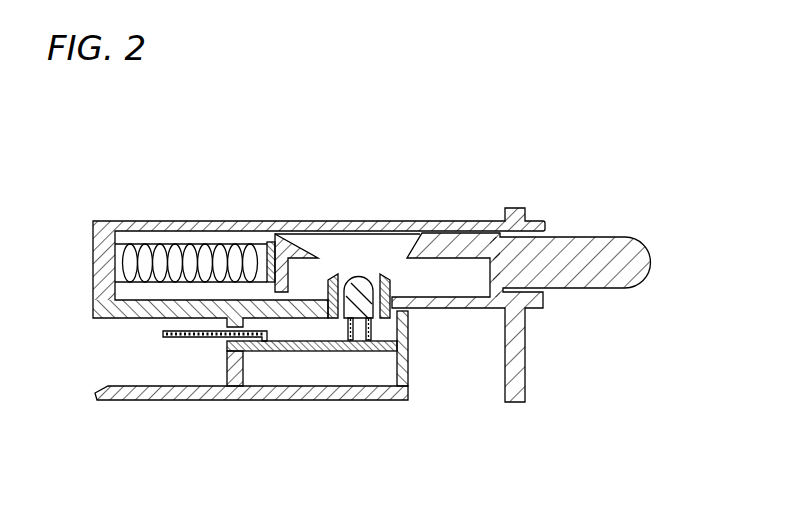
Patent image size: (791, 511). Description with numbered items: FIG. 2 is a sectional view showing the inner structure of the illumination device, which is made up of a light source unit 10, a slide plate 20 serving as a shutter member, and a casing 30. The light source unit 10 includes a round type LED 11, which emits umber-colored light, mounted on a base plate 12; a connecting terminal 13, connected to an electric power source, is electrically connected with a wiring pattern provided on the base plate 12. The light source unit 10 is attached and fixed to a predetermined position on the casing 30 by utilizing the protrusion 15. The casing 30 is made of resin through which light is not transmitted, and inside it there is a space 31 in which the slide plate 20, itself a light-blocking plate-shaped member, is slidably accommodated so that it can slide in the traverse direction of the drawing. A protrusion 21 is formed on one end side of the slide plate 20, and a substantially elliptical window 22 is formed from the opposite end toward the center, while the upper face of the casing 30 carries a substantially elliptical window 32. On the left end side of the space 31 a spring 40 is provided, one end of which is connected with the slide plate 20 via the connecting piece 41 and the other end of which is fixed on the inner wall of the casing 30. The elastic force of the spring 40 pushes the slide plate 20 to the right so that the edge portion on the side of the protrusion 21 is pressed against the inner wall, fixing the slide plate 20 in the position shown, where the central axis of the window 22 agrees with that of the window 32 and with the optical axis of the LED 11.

The light source unit 10 is at (250, 412).
The LED 11 is at (356, 278).
The base plate 12 is at (313, 351).
The connecting terminal 13 is at (187, 338).
The protrusion 15 is at (331, 275).
The slide plate 20 is at (527, 278).
The protrusion 21 is at (600, 237).
The window 22 is at (403, 238).
The casing 30 is at (218, 221).
The space 31 is at (483, 247).
The window 32 is at (367, 221).
The spring 40 is at (165, 243).
The connecting piece 41 is at (273, 240).